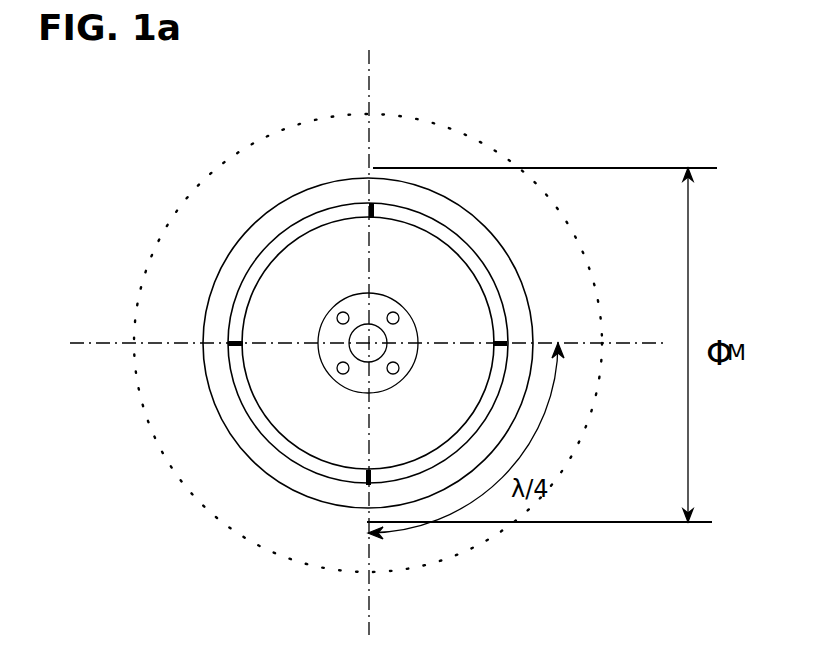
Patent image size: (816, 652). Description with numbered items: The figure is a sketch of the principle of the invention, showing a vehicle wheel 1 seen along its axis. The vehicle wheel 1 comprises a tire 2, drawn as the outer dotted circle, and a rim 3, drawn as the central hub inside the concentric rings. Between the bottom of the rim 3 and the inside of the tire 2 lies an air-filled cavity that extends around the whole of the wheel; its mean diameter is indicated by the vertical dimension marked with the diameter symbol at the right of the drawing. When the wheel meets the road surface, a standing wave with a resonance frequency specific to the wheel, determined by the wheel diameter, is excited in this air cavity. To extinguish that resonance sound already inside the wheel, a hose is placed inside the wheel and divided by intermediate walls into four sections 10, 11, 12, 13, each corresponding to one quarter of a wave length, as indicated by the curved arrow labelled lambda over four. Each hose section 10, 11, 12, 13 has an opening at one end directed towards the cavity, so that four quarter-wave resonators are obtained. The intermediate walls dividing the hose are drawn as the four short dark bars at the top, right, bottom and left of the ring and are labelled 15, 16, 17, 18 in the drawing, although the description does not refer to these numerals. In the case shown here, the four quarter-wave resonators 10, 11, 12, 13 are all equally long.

The vehicle wheel 1 is at (453, 119).
The tire 2 is at (268, 177).
The rim 3 is at (292, 408).
The hose section 10 is at (282, 455).
The hose section 11 is at (260, 253).
The hose section 12 is at (458, 235).
The hose section 13 is at (483, 420).
The coupling element 15 is at (234, 343).
The coupling element 16 is at (371, 203).
The coupling element 17 is at (500, 343).
The coupling element 18 is at (368, 482).